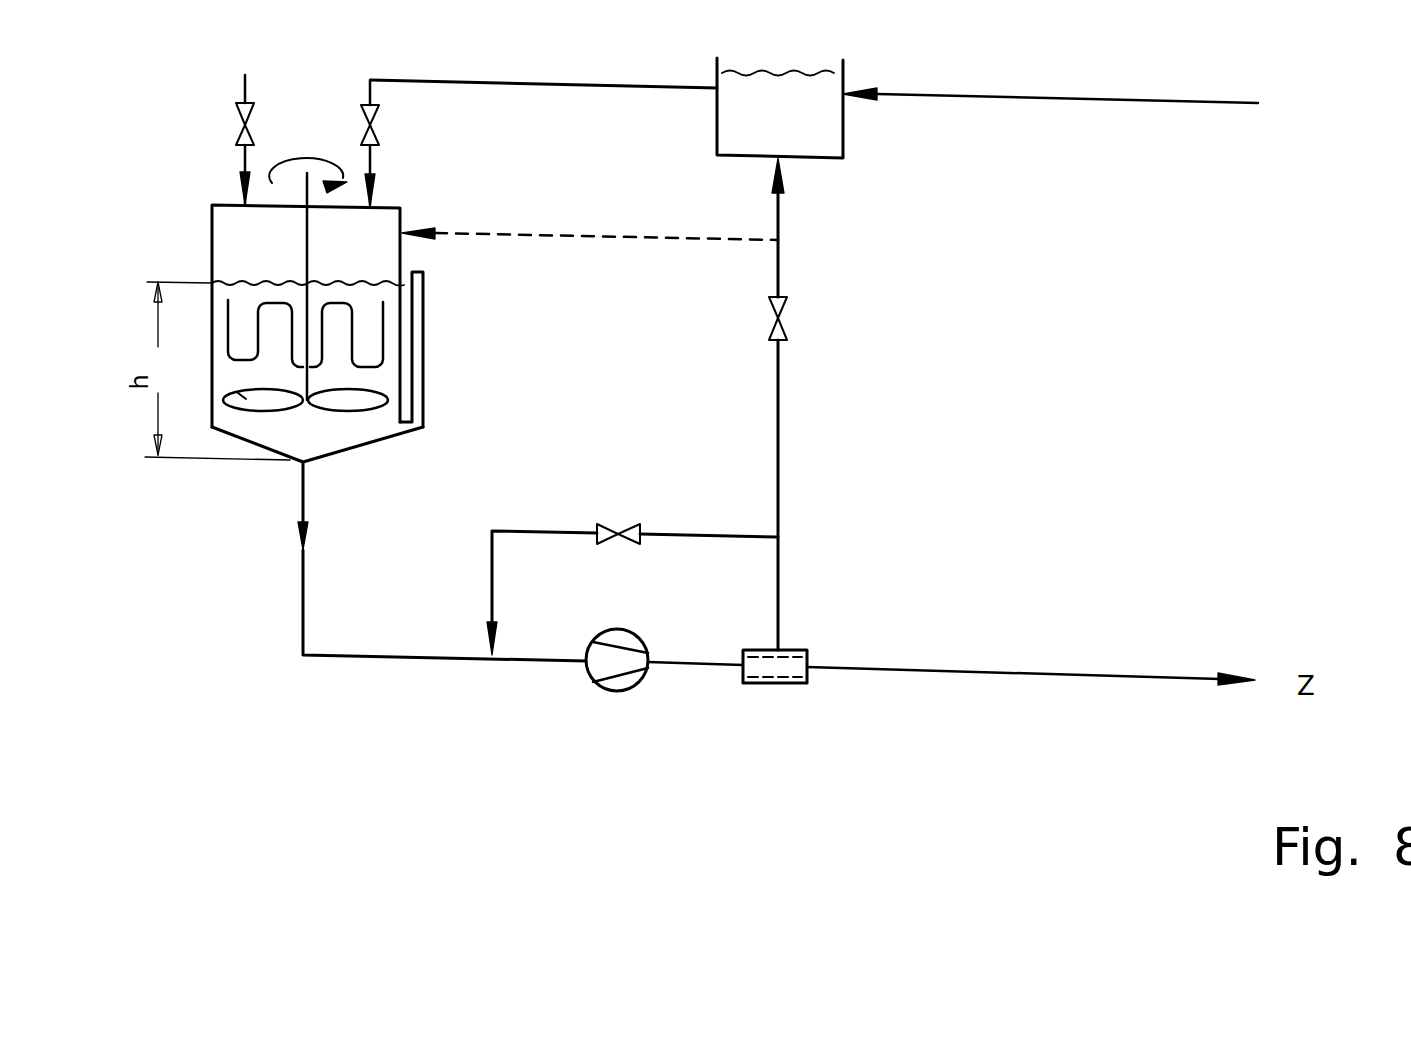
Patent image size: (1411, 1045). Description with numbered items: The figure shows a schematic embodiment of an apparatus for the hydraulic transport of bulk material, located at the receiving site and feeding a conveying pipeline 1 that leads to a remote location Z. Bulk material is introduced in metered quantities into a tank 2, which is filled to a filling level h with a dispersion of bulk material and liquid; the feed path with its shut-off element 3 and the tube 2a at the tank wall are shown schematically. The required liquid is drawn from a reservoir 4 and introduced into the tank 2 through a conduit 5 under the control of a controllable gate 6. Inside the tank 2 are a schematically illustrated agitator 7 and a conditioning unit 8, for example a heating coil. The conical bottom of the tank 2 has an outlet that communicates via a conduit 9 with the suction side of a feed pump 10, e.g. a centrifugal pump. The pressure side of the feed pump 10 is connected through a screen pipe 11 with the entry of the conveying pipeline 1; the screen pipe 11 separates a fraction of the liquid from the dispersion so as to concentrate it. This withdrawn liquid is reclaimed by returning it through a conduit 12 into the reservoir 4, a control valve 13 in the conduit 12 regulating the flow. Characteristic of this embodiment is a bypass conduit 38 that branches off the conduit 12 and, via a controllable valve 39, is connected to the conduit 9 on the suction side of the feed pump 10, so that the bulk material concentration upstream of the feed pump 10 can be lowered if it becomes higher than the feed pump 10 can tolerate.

The conveying pipeline 1 is at (1010, 678).
The tank 2 is at (212, 228).
The overflow tube 2a is at (430, 272).
The feed valve 3 is at (232, 137).
The reservoir 4 is at (843, 140).
The conduit 5 is at (648, 85).
The controllable gate 6 is at (378, 140).
The agitator 7 is at (240, 392).
The conditioning unit 8 is at (228, 308).
The conduit 9 is at (300, 603).
The feed pump 10 is at (613, 695).
The screen pipe 11 is at (775, 685).
The conduit 12 is at (778, 495).
The control valve 13 is at (787, 328).
The bypass conduit 38 is at (730, 535).
The controllable valve 39 is at (632, 530).